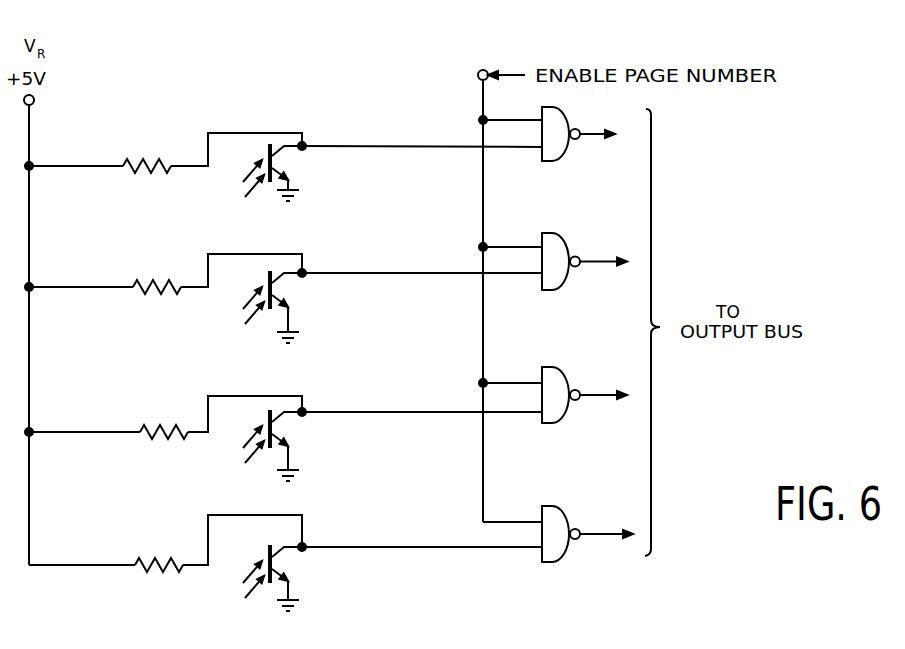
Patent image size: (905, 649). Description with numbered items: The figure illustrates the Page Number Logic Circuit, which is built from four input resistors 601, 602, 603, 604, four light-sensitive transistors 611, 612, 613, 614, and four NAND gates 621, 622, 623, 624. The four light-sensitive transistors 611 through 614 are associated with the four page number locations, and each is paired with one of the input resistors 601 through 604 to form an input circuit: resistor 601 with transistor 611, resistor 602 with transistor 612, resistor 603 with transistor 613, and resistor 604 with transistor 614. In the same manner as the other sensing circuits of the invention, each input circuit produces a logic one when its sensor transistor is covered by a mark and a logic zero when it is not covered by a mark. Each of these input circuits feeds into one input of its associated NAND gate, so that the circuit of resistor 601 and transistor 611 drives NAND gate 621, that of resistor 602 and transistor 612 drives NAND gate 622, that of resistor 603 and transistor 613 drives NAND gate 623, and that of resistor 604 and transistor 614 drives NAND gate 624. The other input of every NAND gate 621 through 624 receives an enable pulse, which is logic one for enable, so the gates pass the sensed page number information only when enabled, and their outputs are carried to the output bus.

The resistor 601 is at (152, 176).
The resistor 602 is at (157, 297).
The resistor 603 is at (162, 441).
The resistor 604 is at (162, 580).
The light sensitive transistor 611 is at (282, 163).
The light sensitive transistor 612 is at (282, 290).
The light sensitive transistor 613 is at (282, 429).
The light sensitive transistor 614 is at (282, 564).
The NAND gate 621 is at (556, 161).
The NAND gate 622 is at (556, 290).
The NAND gate 623 is at (556, 423).
The NAND gate 624 is at (556, 562).